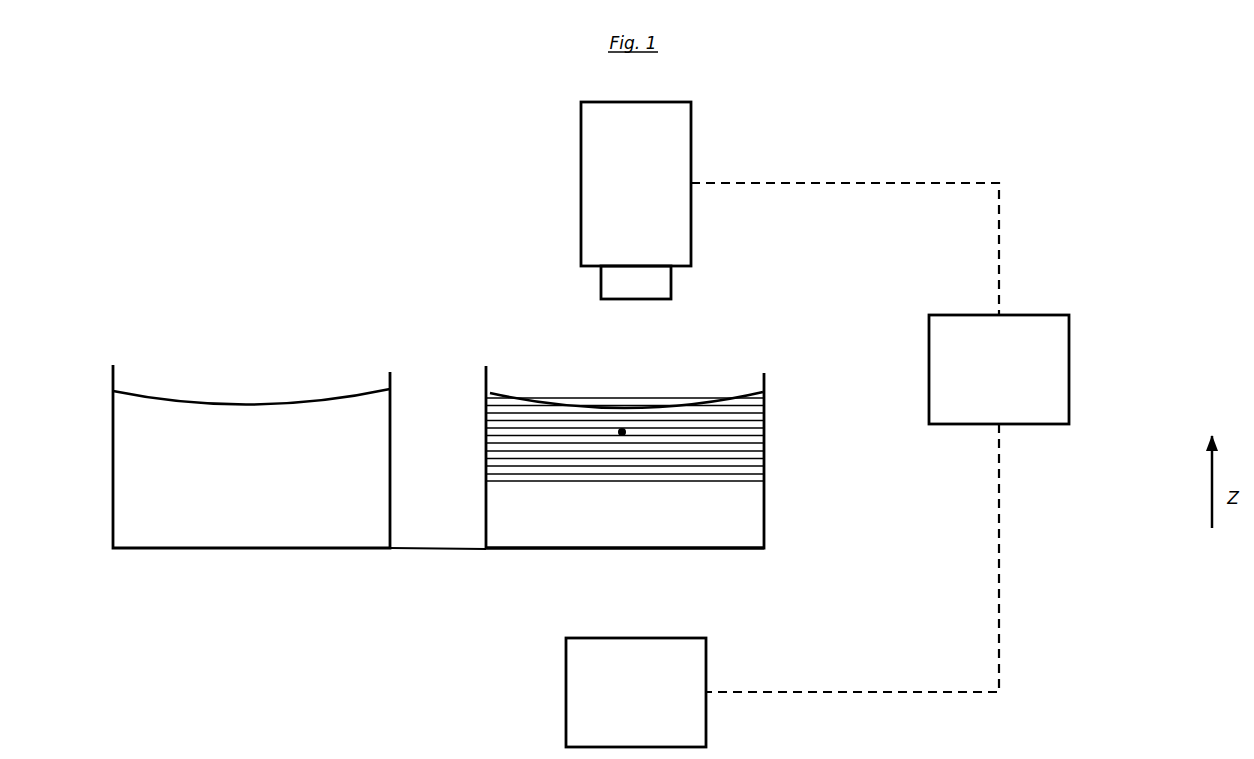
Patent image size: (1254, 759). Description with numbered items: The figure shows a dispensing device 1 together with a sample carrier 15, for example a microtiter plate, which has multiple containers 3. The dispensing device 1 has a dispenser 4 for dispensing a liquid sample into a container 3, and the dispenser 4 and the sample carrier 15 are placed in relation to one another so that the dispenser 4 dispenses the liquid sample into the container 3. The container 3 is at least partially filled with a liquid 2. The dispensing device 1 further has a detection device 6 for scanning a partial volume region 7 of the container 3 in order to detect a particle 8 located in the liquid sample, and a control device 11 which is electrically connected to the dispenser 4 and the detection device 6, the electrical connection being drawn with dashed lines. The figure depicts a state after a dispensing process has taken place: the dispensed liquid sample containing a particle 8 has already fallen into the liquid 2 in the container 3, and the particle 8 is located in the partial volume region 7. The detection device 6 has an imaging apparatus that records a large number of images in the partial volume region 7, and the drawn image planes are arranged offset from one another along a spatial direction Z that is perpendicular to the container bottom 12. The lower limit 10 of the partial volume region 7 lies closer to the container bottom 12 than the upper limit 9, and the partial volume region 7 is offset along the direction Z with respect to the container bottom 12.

The dispensing device 1 is at (265, 117).
The liquid 2 is at (747, 513).
The container 3 is at (176, 342).
The dispenser 4 is at (608, 181).
The detection device 6 is at (580, 690).
The partial volume region 7 is at (776, 425).
The particle 8 is at (622, 432).
The upper limit 9 is at (662, 398).
The lower limit 10 is at (568, 481).
The control device 11 is at (1043, 372).
The container bottom 12 is at (712, 550).
The sample carrier 15 is at (133, 237).